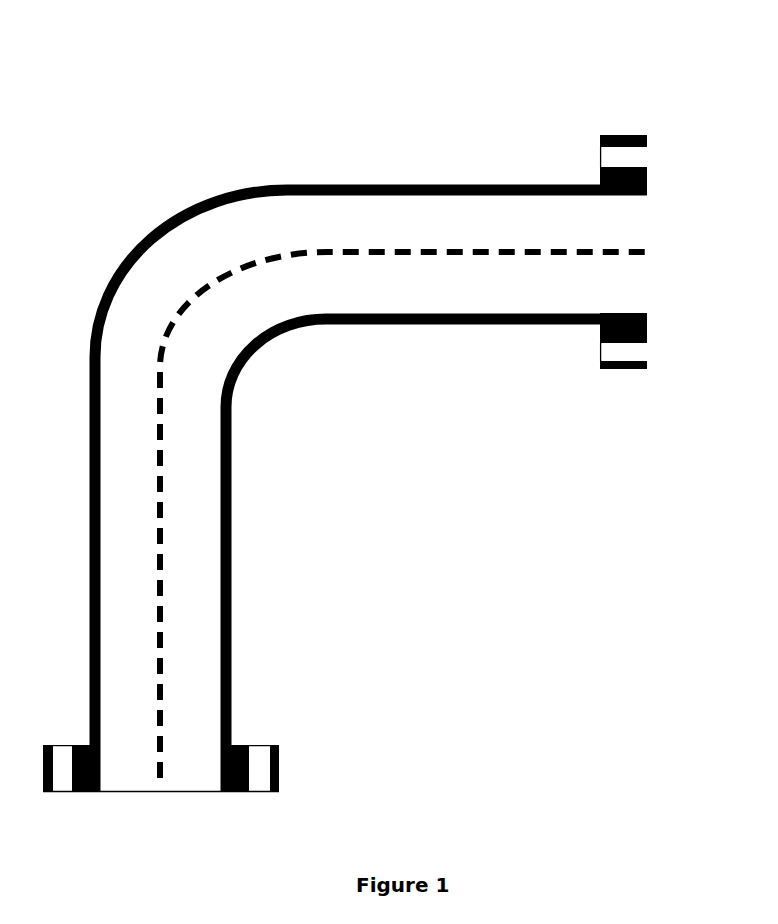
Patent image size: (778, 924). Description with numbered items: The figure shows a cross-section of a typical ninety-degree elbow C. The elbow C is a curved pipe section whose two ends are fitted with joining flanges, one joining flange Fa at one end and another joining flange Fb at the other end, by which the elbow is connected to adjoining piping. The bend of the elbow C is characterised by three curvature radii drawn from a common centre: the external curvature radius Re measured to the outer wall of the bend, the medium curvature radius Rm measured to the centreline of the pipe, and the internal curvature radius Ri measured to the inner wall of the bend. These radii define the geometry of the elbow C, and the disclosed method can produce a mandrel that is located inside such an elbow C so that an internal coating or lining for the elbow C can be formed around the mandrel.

The elbow C is at (133, 218).
The joining flange Fa is at (623, 377).
The joining flange Fb is at (285, 770).
The medium curvature radius Rm is at (407, 475).
The internal curvature radius Ri is at (407, 475).
The external curvature radius Re is at (112, 355).